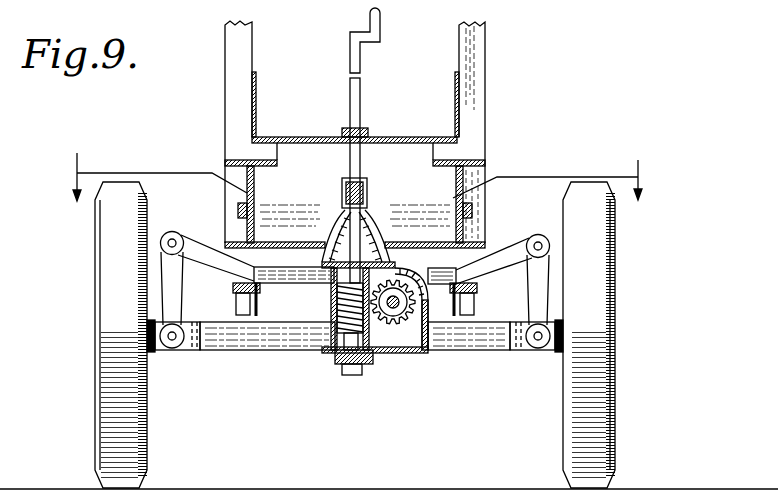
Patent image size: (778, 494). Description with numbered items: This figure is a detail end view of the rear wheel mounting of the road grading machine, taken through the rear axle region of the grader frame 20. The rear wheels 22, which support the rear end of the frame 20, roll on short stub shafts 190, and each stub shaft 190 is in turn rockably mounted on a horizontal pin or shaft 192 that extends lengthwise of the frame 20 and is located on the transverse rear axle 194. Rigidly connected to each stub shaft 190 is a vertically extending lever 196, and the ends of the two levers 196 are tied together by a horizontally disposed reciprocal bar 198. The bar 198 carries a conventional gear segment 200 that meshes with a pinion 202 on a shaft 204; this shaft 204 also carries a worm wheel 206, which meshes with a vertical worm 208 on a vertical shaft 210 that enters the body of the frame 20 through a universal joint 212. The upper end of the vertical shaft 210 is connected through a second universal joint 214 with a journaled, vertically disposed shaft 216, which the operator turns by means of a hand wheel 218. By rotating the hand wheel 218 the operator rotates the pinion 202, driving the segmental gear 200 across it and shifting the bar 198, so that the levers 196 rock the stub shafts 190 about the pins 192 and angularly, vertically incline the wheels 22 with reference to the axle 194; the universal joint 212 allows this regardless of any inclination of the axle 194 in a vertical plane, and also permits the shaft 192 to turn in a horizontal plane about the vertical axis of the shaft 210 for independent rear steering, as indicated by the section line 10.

The section line 10 is at (360, 166).
The grader frame 20 is at (238, 210).
The rear wheels 22 is at (113, 282).
The stub shafts 190 is at (150, 345).
The horizontal pins or shafts 192 is at (180, 347).
The rear axle 194 is at (272, 342).
The lever 196 is at (167, 296).
The bar 198 is at (276, 268).
The gear segment 200 is at (440, 275).
The pinion 202 is at (400, 328).
The shaft 204 is at (388, 326).
The worm wheel 206 is at (374, 360).
The worm 208 is at (355, 299).
The vertical shaft 210 is at (362, 240).
The universal joint 212 is at (348, 246).
The universal joint 214 is at (366, 190).
The shaft 216 is at (354, 128).
The hand wheel 218 is at (380, 24).